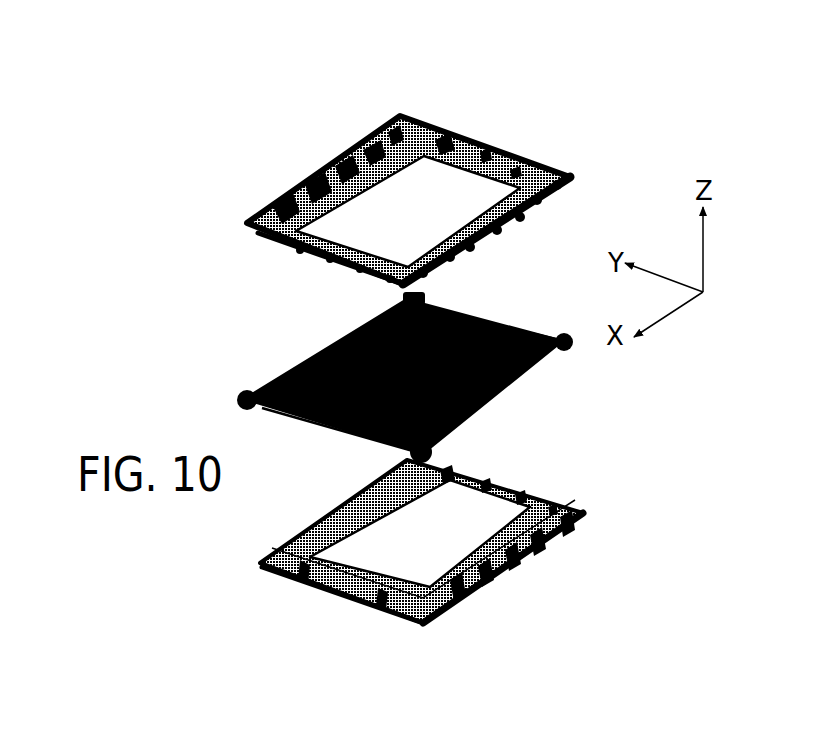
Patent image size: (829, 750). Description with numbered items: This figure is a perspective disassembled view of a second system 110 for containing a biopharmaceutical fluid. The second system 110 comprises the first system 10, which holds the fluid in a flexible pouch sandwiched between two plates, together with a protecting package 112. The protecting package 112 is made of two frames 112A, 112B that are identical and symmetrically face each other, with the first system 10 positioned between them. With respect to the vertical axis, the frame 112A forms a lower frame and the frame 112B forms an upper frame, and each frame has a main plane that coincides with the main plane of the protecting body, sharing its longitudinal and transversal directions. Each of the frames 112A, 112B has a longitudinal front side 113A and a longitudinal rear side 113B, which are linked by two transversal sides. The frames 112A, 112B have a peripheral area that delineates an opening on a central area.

The second system 110 is at (294, 118).
The protecting package 112 is at (297, 188).
The lower frame 112A is at (330, 600).
The upper frame 112B is at (427, 120).
The longitudinal front side 113A is at (487, 137).
The longitudinal rear side 113B is at (305, 258).
The first system 10 is at (354, 379).